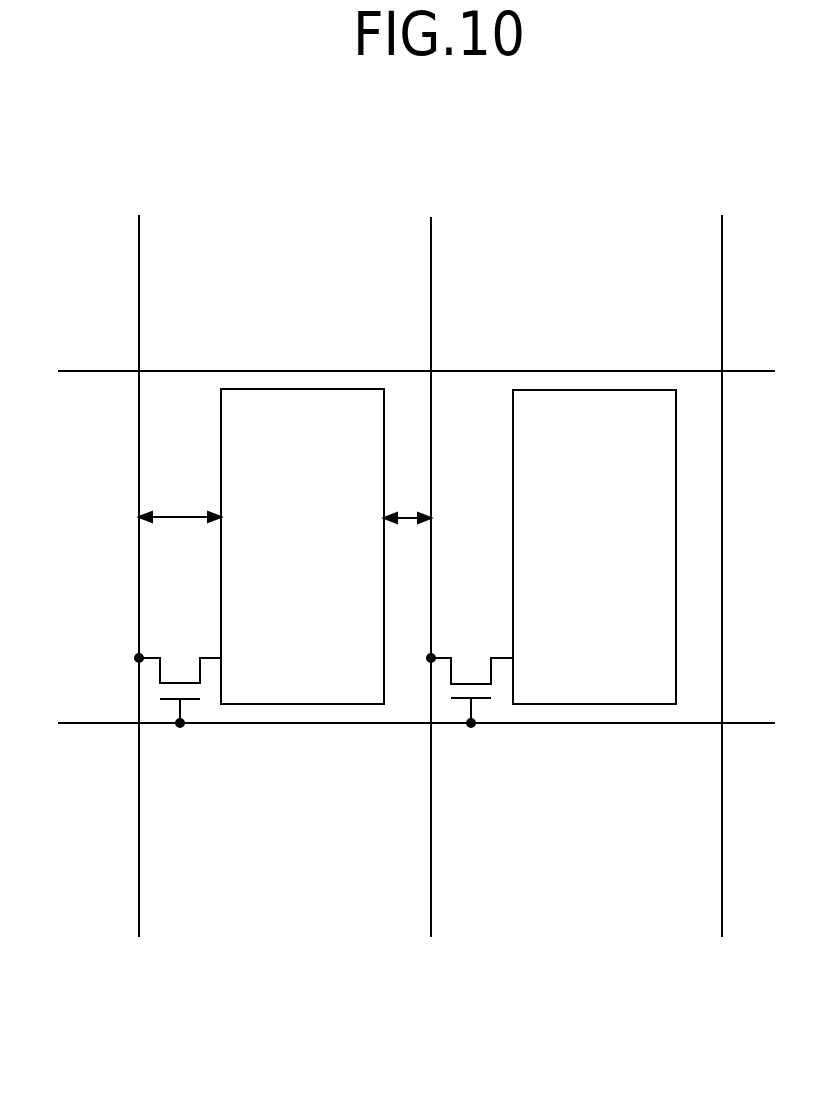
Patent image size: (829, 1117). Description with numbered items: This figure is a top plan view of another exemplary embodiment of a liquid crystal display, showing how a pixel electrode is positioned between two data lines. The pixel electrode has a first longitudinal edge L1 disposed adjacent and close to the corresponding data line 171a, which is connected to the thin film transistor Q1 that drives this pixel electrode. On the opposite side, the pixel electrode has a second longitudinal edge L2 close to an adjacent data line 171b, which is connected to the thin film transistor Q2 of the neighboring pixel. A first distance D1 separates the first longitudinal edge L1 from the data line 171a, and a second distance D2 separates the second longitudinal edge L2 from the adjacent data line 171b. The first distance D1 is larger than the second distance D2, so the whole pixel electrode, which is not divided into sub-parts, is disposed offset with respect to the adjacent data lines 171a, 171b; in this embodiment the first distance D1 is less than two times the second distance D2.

The data line 171a is at (139, 555).
The adjacent data line 171b is at (432, 555).
The first longitudinal edge L1 is at (221, 575).
The second longitudinal edge L2 is at (384, 611).
The first distance D1 is at (180, 497).
The second distance D2 is at (407, 498).
The thin film transistor Q1 is at (178, 676).
The thin film transistor of the neighboring pixel Q2 is at (470, 676).